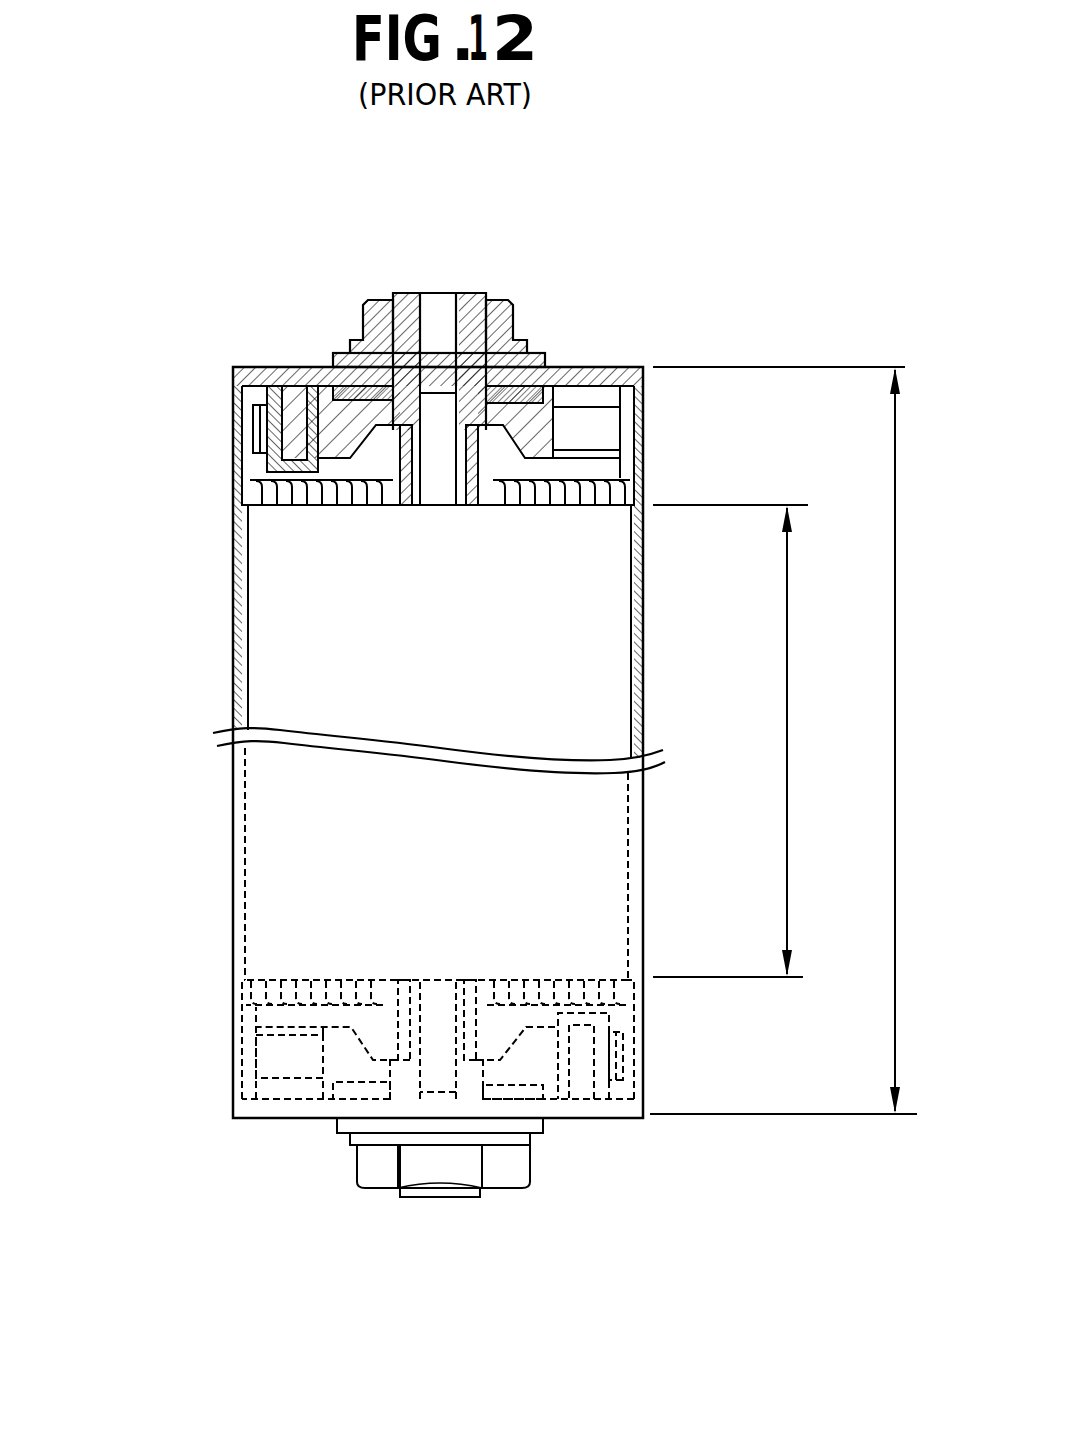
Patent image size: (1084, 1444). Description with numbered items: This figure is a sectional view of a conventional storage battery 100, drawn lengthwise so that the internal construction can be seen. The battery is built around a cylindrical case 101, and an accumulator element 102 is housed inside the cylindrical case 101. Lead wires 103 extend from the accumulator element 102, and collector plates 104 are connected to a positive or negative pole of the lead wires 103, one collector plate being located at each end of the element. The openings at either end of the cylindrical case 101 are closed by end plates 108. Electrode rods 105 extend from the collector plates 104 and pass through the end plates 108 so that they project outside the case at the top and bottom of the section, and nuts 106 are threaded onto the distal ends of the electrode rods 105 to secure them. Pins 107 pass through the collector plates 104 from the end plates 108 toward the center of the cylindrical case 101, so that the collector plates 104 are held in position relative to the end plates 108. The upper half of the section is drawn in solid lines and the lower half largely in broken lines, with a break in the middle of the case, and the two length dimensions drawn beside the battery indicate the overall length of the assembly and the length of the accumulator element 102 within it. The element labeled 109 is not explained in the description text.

The storage battery 100 is at (196, 531).
The cylindrical case 101 is at (232, 890).
The accumulator element 102 is at (318, 653).
The lead wires 103 is at (257, 492).
The collector plates 104 is at (640, 430).
The electrode rods 105 is at (473, 293).
The nuts 106 is at (515, 320).
The pins 107 is at (257, 428).
The end plates 108 is at (287, 367).
The mounting surface 109 is at (525, 352).